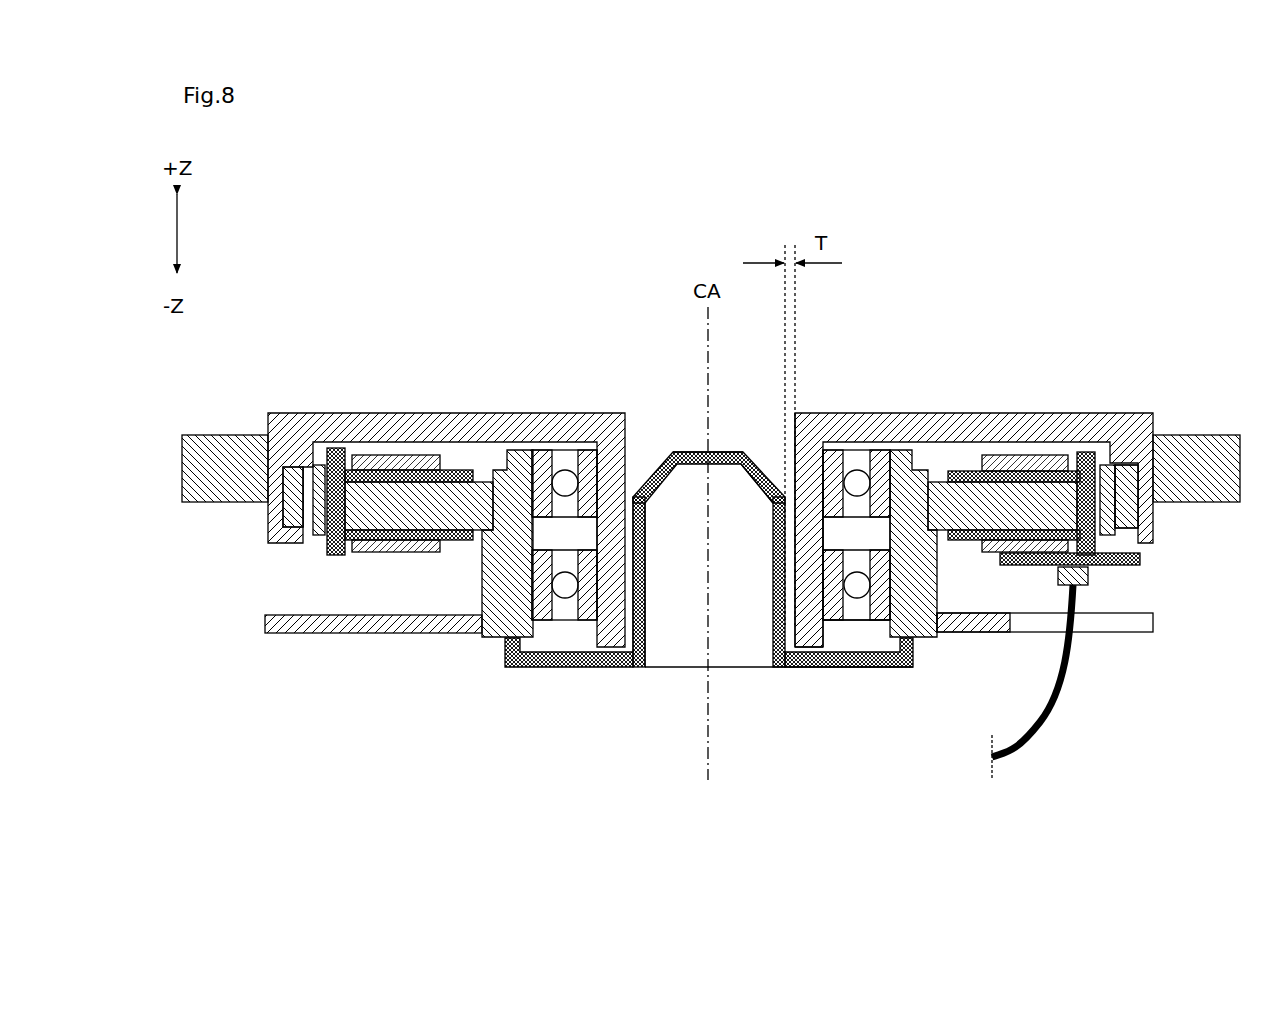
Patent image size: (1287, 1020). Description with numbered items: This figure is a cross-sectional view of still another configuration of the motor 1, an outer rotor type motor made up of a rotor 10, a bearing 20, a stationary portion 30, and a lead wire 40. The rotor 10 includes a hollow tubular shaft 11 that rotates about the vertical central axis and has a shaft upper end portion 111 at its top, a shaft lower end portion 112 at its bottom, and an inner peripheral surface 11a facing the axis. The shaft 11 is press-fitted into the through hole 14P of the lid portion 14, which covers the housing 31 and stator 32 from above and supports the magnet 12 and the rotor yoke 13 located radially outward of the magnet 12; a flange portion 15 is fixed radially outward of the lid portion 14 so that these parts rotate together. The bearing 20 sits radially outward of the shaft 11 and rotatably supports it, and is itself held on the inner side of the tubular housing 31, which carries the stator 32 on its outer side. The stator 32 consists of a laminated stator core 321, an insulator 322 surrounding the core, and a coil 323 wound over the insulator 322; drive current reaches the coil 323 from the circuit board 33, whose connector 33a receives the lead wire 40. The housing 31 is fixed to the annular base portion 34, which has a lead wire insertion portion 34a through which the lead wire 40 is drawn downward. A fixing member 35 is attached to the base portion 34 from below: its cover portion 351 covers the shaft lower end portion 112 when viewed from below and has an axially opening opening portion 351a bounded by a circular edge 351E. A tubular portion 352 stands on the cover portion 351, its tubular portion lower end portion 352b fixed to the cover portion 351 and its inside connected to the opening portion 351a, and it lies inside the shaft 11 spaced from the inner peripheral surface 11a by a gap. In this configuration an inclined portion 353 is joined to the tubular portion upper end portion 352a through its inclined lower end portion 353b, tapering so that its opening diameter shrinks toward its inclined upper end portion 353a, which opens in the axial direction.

The motor 1 is at (1170, 312).
The rotor 10 is at (552, 393).
The shaft 11 is at (808, 430).
The shaft upper end portion 111 is at (609, 413).
The shaft lower end portion 112 is at (817, 663).
The inner peripheral surface 11a is at (790, 603).
The magnet 12 is at (313, 535).
The rotor yoke 13 is at (293, 527).
The lid portion 14 is at (378, 413).
The through hole 14P is at (832, 432).
The flange portion 15 is at (228, 500).
The bearing 20 is at (868, 413).
The stationary portion 30 is at (300, 655).
The housing 31 is at (500, 450).
The stator 32 is at (417, 450).
The stator core 321 is at (465, 540).
The insulator 322 is at (342, 556).
The coil 323 is at (403, 552).
The circuit board 33 is at (1143, 561).
The connector 33a is at (1088, 577).
The base portion 34 is at (385, 633).
The lead wire insertion portion 34a is at (1022, 633).
The fixing member 35 is at (605, 670).
The cover portion 351 is at (560, 667).
The opening portion 351a is at (678, 669).
The edge 351E is at (780, 667).
The tubular portion 352 is at (768, 628).
The tubular portion upper end portion 352a is at (650, 508).
The tubular portion lower end portion 352b is at (647, 637).
The inclined portion 353 is at (655, 452).
The inclined upper end portion 353a is at (745, 452).
The inclined lower end portion 353b is at (762, 498).
The lead wire 40 is at (1062, 675).